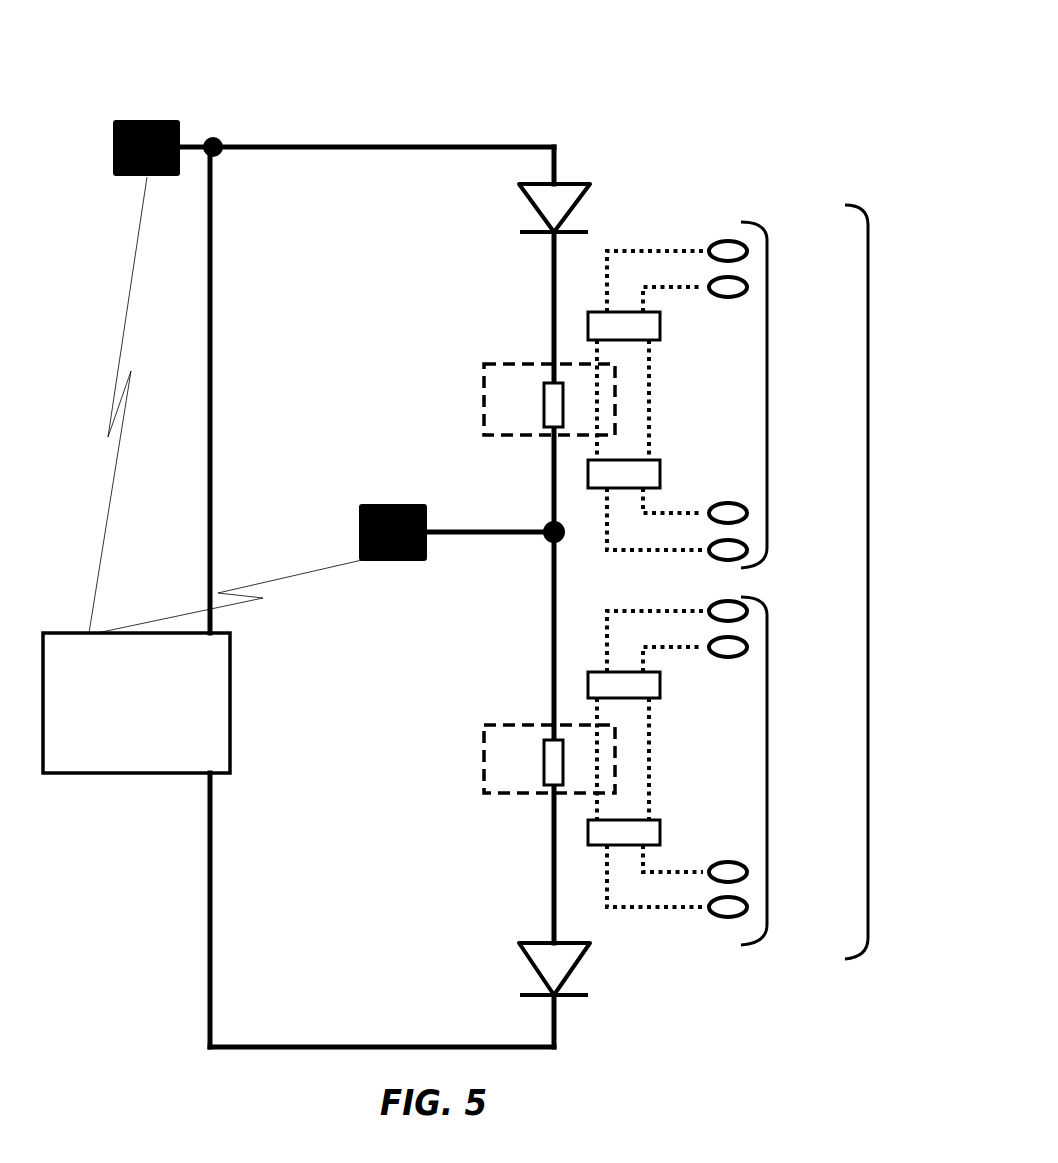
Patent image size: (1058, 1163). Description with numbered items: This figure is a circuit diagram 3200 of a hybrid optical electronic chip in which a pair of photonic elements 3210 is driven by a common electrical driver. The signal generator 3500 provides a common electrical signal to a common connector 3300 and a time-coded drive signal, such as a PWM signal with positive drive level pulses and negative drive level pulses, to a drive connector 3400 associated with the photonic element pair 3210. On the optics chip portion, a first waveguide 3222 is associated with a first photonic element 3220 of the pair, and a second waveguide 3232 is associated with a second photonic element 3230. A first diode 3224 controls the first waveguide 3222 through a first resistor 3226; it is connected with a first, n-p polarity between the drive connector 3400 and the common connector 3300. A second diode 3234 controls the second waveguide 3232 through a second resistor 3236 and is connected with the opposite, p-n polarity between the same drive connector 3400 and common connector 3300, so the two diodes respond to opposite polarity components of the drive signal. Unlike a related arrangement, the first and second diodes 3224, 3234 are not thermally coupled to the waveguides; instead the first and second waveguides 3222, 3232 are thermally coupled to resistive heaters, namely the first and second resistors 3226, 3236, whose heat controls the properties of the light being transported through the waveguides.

The circuit diagram 3200 is at (392, 80).
The pair of photonic elements 3210 is at (868, 582).
The first photonic element 3220 is at (767, 395).
The first waveguide 3222 is at (597, 403).
The first diode 3224 is at (556, 203).
The first resistor 3226 is at (557, 400).
The second photonic element 3230 is at (767, 765).
The second waveguide 3232 is at (597, 762).
The second diode 3234 is at (556, 965).
The second resistor 3236 is at (557, 762).
The common connector 3300 is at (360, 505).
The drive connector 3400 is at (152, 118).
The signal generator 3500 is at (202, 475).